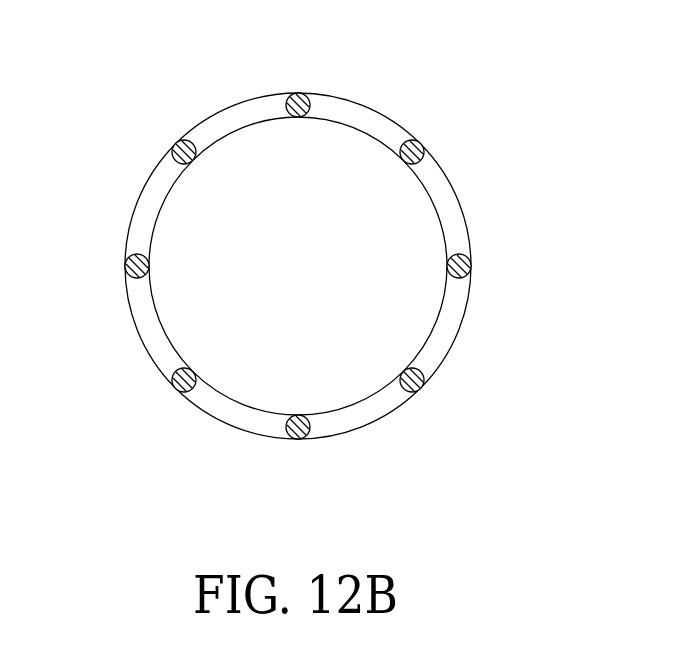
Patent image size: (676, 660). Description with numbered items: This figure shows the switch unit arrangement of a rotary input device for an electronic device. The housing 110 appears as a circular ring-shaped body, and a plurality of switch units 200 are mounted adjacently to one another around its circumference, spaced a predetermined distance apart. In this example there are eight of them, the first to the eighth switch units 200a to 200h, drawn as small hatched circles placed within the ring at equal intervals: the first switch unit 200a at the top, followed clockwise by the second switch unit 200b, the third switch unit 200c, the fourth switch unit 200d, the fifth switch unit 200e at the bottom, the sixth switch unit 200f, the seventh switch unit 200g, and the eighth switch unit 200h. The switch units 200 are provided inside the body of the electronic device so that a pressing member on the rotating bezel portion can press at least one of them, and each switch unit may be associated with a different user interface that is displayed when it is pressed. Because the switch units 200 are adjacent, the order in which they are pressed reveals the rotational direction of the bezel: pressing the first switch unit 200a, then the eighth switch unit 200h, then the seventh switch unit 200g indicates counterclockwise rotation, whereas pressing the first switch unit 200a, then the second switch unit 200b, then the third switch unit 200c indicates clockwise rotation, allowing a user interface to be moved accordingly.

The housing 110 is at (450, 207).
The switch units 200 is at (552, 537).
The first switch unit 200a is at (297, 93).
The second switch unit 200b is at (421, 145).
The third switch unit 200c is at (469, 263).
The fourth switch unit 200d is at (420, 390).
The fifth switch unit 200e is at (297, 439).
The sixth switch unit 200f is at (174, 389).
The seventh switch unit 200g is at (124, 263).
The eighth switch unit 200h is at (174, 147).